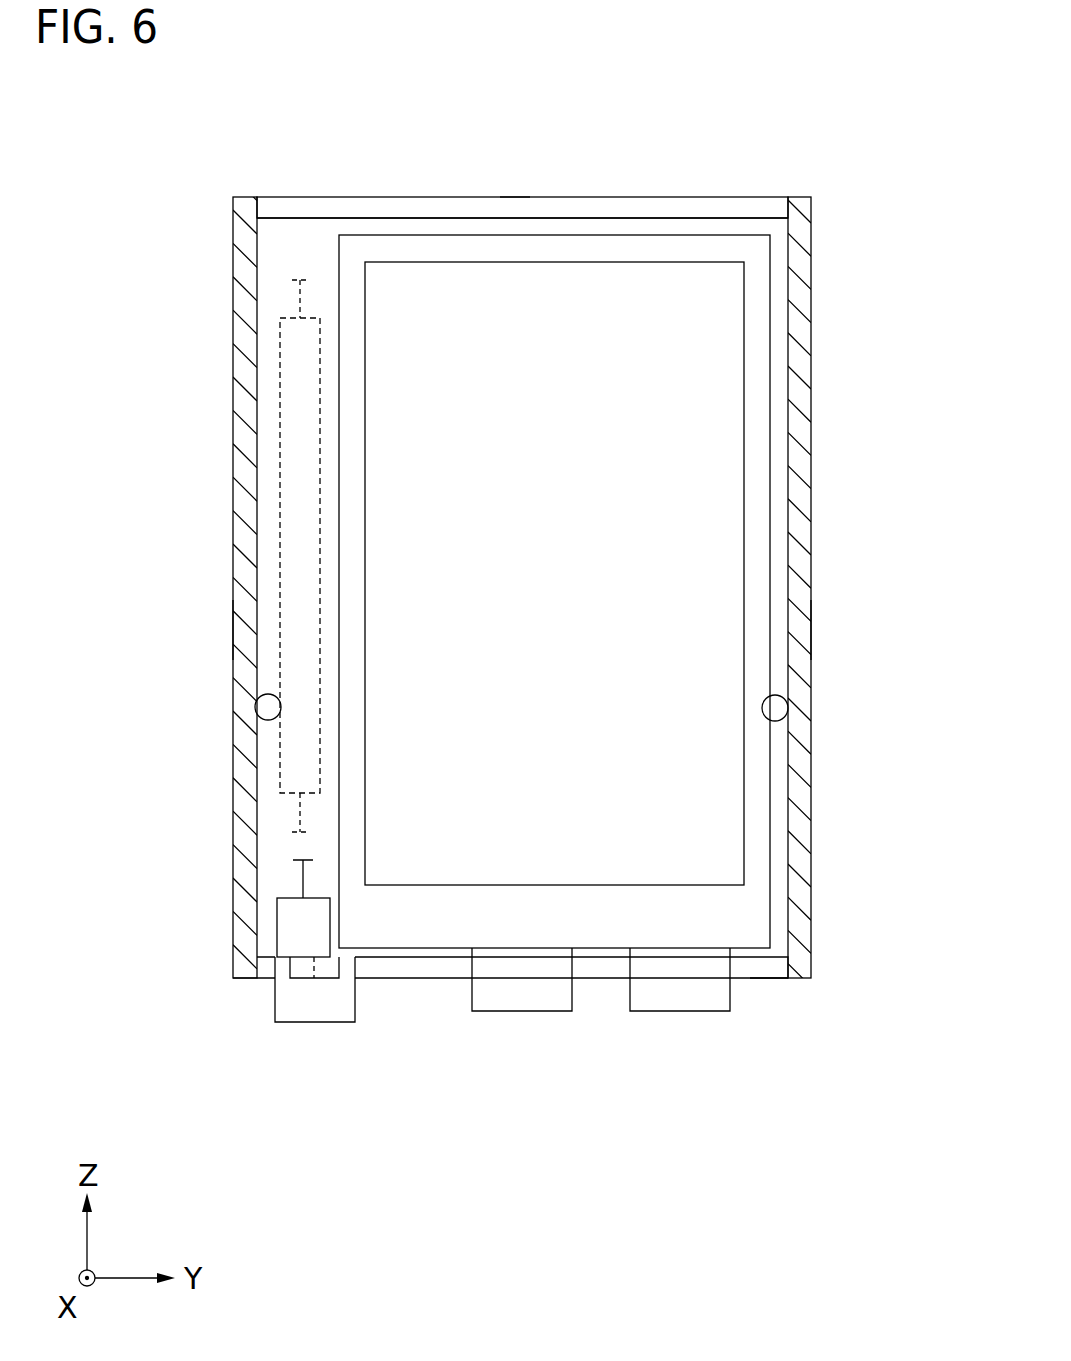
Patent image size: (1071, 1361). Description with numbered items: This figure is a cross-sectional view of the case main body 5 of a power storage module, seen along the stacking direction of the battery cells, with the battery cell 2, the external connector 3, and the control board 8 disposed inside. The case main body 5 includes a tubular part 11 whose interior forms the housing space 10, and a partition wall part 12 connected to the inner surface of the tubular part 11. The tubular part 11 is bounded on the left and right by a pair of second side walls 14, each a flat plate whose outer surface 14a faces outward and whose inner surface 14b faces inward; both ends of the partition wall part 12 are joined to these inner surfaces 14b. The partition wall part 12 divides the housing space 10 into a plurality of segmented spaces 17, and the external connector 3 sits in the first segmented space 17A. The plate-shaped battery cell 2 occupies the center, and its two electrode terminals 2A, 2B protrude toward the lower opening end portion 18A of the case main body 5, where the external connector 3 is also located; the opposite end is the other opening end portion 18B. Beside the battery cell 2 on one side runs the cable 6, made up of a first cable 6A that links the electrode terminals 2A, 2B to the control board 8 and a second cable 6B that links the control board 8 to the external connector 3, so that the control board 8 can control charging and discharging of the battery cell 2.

The case main body 5 is at (226, 188).
The battery cell 2 is at (770, 382).
The electrode terminal 2A is at (522, 990).
The electrode terminal 2B is at (681, 990).
The external connector 3 is at (315, 1010).
The cable 6 is at (227, 610).
The first cable 6A is at (300, 805).
The second cable 6B is at (300, 298).
The control board 8 is at (280, 400).
The housing space 10 is at (779, 988).
The tubular part 11 is at (233, 978).
The partition wall part 12 is at (673, 218).
The second side wall 14 is at (245, 530).
The outer surface 14a is at (233, 630).
The inner surface 14b is at (258, 716).
The segmented space 17 is at (556, 162).
The first segmented space 17A is at (515, 206).
The opening end portion 18A is at (811, 955).
The upper frame member 18B is at (811, 202).